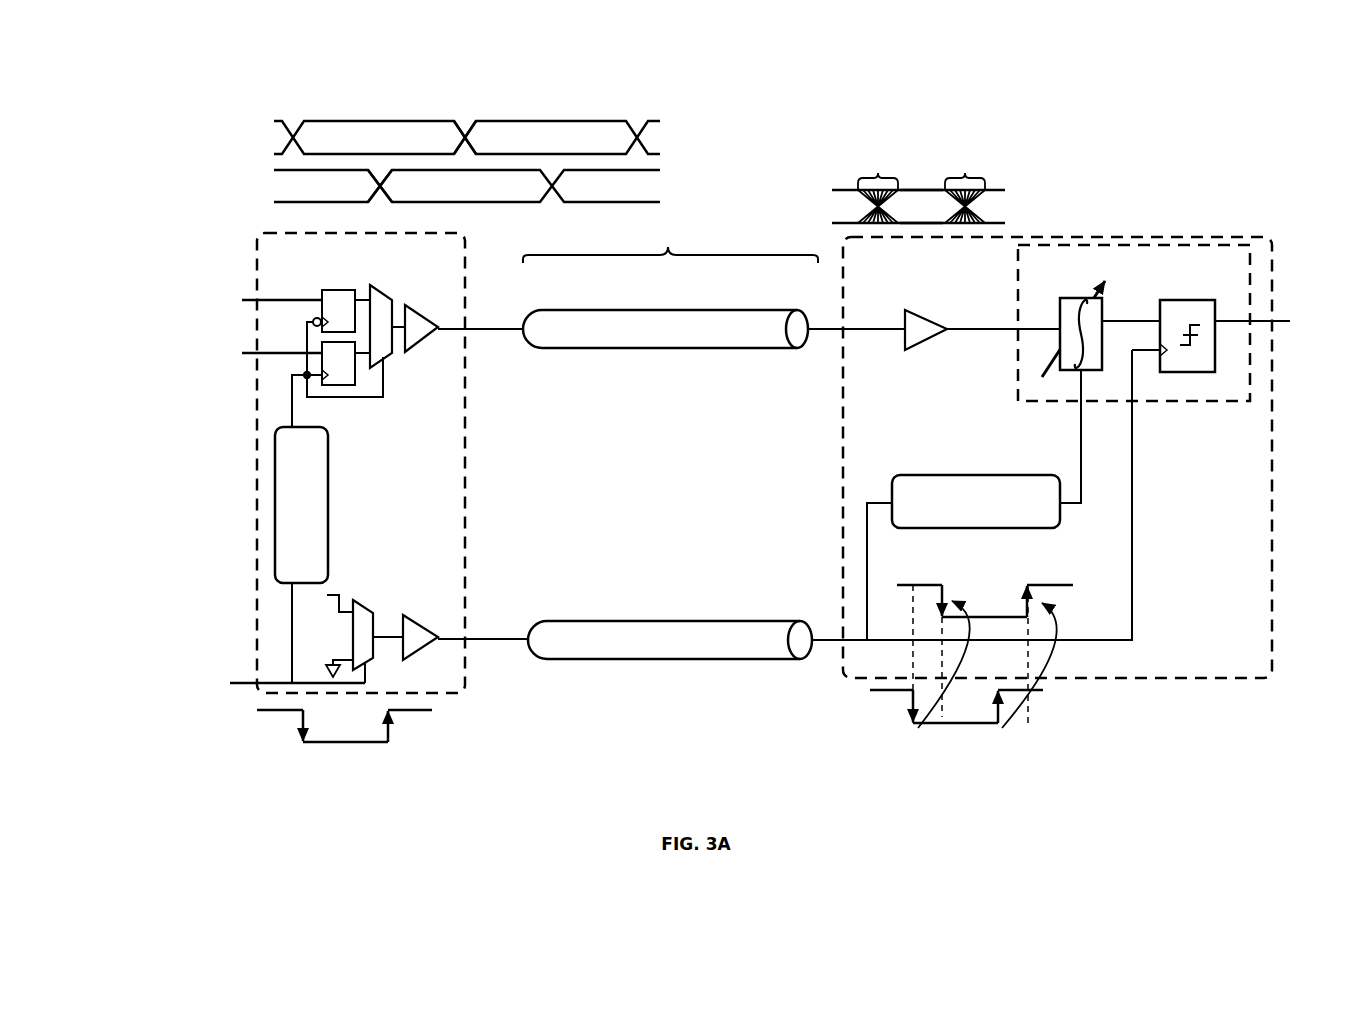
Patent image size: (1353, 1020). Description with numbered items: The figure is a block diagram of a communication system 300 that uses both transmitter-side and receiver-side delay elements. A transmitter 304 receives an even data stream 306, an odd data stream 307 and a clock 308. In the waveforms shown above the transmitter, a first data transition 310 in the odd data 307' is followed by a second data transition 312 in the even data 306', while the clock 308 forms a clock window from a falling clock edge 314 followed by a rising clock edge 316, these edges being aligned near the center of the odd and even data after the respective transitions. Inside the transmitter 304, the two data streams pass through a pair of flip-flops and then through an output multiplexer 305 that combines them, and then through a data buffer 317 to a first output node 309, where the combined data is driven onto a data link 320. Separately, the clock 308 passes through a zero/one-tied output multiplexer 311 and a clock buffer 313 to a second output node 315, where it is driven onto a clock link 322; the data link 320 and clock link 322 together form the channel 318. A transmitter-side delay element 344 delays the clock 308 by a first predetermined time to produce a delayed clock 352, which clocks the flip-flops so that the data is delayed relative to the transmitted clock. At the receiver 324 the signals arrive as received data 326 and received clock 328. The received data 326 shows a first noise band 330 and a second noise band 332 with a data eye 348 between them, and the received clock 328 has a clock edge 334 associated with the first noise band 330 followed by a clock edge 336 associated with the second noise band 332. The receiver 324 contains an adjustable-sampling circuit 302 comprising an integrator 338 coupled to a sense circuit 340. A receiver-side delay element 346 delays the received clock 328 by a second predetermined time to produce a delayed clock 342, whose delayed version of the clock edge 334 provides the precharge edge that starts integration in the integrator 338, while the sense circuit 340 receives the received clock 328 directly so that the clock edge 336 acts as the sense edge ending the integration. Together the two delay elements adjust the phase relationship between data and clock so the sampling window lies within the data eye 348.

The communication system 300 is at (828, 70).
The adjustable-sampling circuit 302 is at (1134, 323).
The transmitter 304 is at (361, 463).
The output multiplexer (omux) 305 is at (390, 360).
The even data stream 306 is at (238, 288).
The odd data stream 307 is at (240, 343).
The even data 306' is at (420, 223).
The odd data 307' is at (420, 292).
The clock 308 is at (224, 686).
The first output node 309 is at (483, 328).
The first data transition 310 is at (380, 178).
The 0/1-tied output multiplexer (omux) 311 is at (353, 600).
The second data transition 312 is at (465, 125).
The clock buffer 313 is at (417, 658).
The falling clock edge 314 is at (302, 743).
The second output node 315 is at (488, 639).
The rising clock edge 316 is at (388, 743).
The data buffer 317 is at (425, 352).
The channel 318 is at (670, 242).
The data link 320 is at (714, 329).
The clock link 322 is at (670, 640).
The receiver 324 is at (1057, 457).
The received data 326 is at (875, 329).
The received clock 328 is at (830, 643).
The first noise band 330 is at (877, 171).
The second noise band 332 is at (967, 171).
The clock edge (precharge) 334 is at (913, 723).
The clock edge (sense) 336 is at (998, 723).
The integrator 338 is at (1068, 372).
The sense circuit 340 is at (1163, 372).
The delayed clock 342 is at (1078, 503).
The transmitter-side delay element 344 is at (301, 555).
The receiver-side delay element 346 is at (963, 557).
The data eye 348 is at (920, 196).
The delayed clock 352 is at (290, 377).